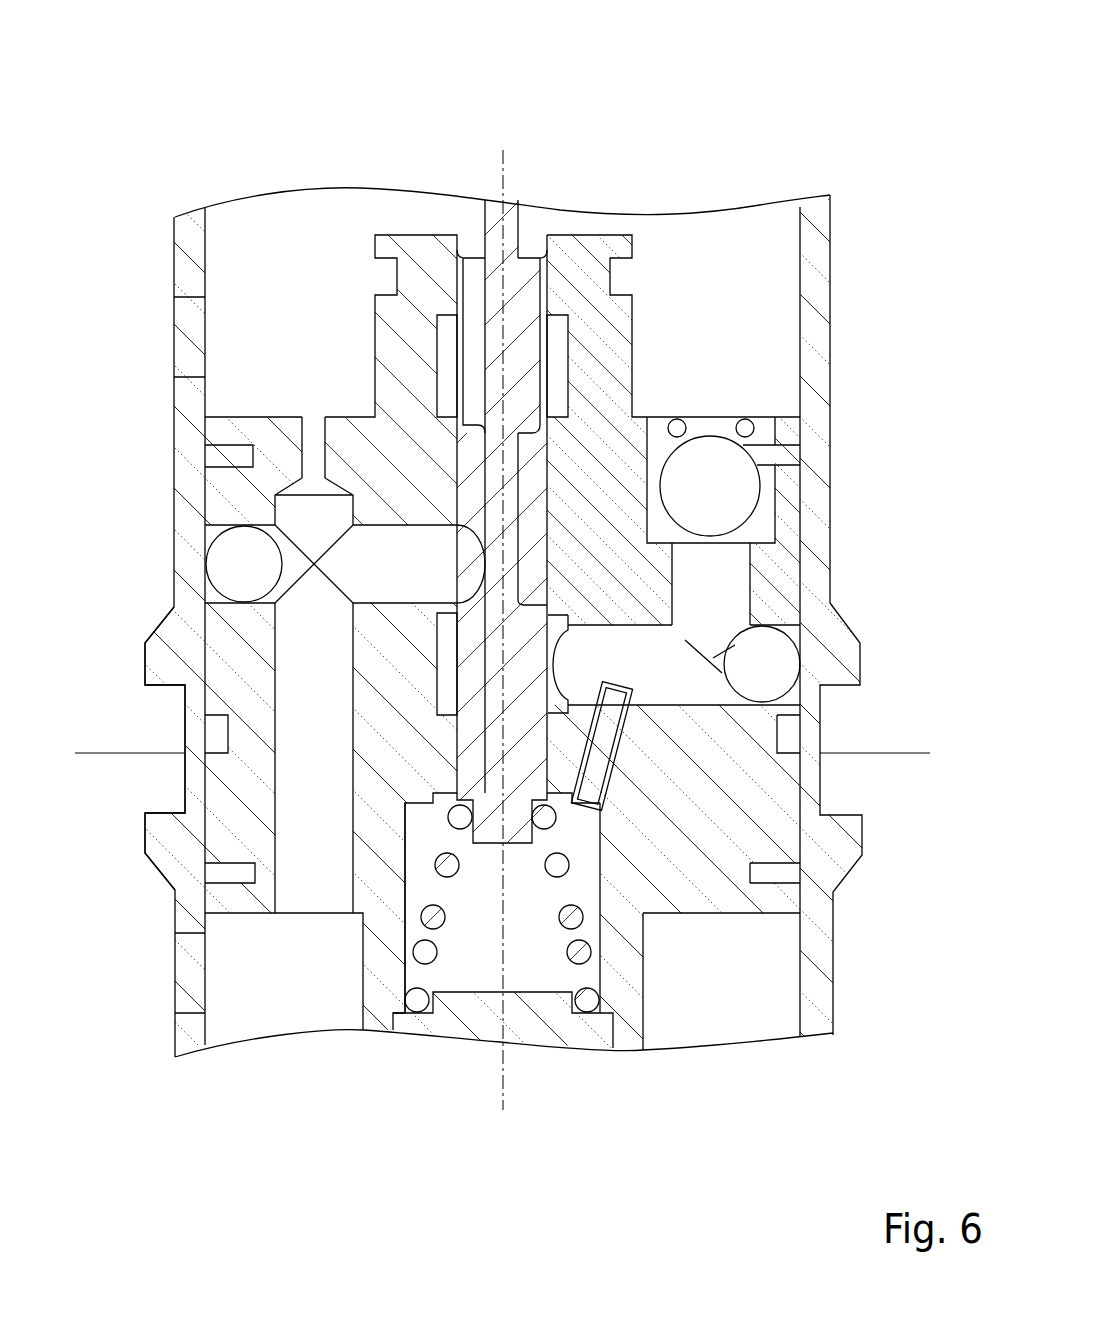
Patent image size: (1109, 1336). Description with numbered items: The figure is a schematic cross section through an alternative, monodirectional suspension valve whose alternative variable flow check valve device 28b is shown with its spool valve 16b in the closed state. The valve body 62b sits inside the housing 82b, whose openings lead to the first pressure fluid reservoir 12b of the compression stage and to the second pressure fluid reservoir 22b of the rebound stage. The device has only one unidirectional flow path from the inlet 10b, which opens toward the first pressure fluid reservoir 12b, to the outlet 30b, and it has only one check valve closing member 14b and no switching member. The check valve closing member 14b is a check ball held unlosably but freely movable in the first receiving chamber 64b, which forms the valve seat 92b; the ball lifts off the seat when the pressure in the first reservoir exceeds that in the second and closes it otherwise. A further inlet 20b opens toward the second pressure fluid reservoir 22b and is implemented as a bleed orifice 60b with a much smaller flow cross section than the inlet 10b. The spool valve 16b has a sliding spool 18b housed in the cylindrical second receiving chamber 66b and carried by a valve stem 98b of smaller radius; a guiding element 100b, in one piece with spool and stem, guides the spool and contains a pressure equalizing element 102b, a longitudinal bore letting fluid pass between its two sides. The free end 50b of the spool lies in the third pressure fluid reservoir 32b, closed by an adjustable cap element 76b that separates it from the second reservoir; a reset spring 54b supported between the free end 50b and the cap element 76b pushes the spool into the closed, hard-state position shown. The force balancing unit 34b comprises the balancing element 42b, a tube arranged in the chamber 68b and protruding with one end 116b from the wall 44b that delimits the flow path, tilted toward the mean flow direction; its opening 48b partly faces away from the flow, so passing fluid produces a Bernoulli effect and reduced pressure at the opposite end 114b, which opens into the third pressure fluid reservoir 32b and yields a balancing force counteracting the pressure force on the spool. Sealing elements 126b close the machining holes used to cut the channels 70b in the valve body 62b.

The inlet 10b is at (285, 987).
The first pressure fluid reservoir 12b is at (97, 1087).
The check valve closing member 14b is at (728, 502).
The spool valve 16b is at (529, 640).
The spool 18b is at (480, 653).
The further inlet 20b is at (313, 415).
The second pressure fluid reservoir 22b is at (912, 378).
The variable flow check valve device 28b is at (715, 116).
The outlet 30b is at (710, 398).
The third pressure fluid reservoir 32b is at (463, 962).
The force balancing unit 34b is at (676, 703).
The balancing element 42b is at (612, 768).
The wall 44b is at (634, 718).
The opening 48b is at (619, 686).
The free end 50b is at (520, 828).
The reset spring 54b is at (417, 947).
The bleed orifice 60b is at (311, 465).
The valve body 62b is at (250, 697).
The first receiving chamber 64b is at (765, 478).
The second receiving chamber 66b is at (522, 533).
The chamber 68b is at (608, 809).
The channels 70b is at (300, 833).
The cap element 76b is at (525, 1022).
The housing 82b is at (187, 255).
The valve seat 92b is at (757, 530).
The valve stem 98b is at (510, 213).
The guiding element 100b is at (535, 283).
The pressure equalizing element 102b is at (475, 298).
The opposite end 114b is at (603, 815).
The one end 116b is at (590, 693).
The sealing elements 126b is at (245, 578).